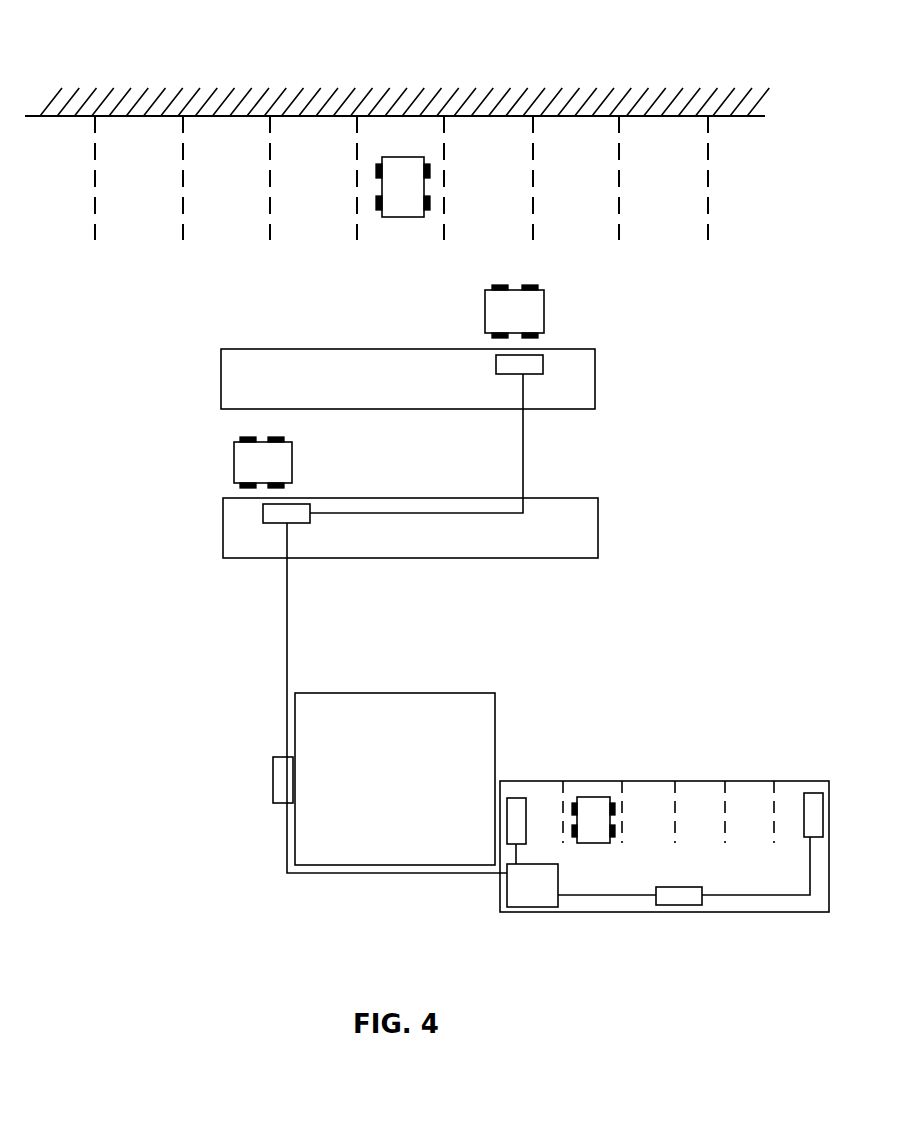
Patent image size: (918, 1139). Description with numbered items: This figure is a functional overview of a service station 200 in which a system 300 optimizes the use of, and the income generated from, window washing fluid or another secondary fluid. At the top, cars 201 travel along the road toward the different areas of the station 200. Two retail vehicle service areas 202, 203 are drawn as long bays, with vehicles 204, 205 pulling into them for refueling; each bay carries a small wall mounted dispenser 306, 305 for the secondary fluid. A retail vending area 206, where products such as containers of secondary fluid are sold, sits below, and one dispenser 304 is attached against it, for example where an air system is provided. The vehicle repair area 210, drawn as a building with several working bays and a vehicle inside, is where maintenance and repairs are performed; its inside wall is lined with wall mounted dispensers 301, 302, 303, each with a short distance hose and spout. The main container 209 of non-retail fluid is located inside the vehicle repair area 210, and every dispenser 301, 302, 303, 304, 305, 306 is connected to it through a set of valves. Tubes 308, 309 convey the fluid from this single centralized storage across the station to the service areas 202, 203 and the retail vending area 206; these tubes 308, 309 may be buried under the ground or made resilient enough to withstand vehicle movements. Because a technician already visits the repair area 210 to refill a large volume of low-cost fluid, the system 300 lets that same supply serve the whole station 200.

The service station 200 is at (708, 44).
The cars 201 is at (403, 187).
The retail vehicle service area 202 is at (582, 349).
The retail vehicle service area 203 is at (580, 498).
The vehicle 204 is at (514, 311).
The vehicle 205 is at (263, 462).
The retail vending area 206 is at (468, 693).
The main container 209 is at (507, 880).
The vehicle repair area 210 is at (665, 781).
The system 300 is at (312, 630).
The wall mounted dispenser 301 is at (513, 798).
The wall mounted dispenser 302 is at (670, 906).
The wall mounted dispenser 303 is at (815, 793).
The wall mounted dispenser 304 is at (272, 783).
The wall mounted dispenser 305 is at (298, 523).
The wall mounted dispenser 306 is at (500, 374).
The tube 308 is at (287, 655).
The tube 309 is at (523, 445).